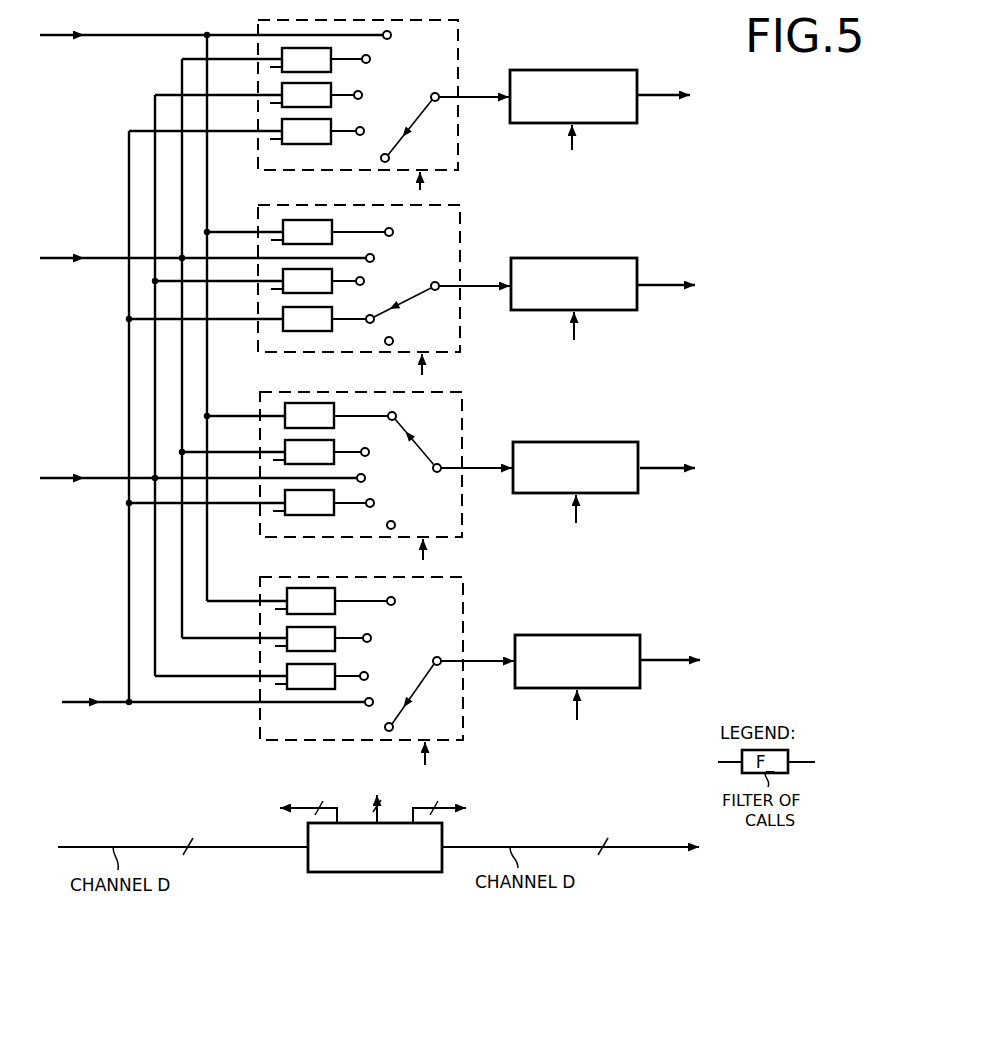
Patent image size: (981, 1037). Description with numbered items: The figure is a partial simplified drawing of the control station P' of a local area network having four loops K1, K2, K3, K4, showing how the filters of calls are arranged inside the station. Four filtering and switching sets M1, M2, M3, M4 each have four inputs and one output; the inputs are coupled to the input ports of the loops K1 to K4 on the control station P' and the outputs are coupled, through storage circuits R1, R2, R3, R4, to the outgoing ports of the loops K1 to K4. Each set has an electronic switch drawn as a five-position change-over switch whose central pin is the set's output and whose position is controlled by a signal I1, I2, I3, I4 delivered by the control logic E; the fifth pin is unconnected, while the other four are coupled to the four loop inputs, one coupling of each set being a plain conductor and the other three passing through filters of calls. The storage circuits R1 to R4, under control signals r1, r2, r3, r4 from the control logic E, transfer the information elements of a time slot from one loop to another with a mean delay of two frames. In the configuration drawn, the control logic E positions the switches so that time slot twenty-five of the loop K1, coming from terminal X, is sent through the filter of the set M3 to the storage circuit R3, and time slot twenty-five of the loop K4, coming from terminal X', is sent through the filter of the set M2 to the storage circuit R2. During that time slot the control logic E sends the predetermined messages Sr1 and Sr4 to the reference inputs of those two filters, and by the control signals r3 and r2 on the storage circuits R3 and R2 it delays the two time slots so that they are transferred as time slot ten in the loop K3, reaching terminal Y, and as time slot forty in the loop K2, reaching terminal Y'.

The filtering and switching set M1 is at (458, 45).
The filtering and switching set M2 is at (321, 275).
The filtering and switching set M3 is at (322, 458).
The filtering and switching set M4 is at (463, 612).
The storage circuit R1 is at (624, 70).
The storage circuit R2 is at (633, 258).
The storage circuit R3 is at (633, 442).
The storage circuit R4 is at (633, 635).
The loop K1 is at (62, 40).
The loop K2 is at (62, 262).
The loop K3 is at (62, 482).
The loop K4 is at (670, 663).
The control signal r1 is at (585, 142).
The control signal r2 is at (588, 329).
The control signal r3 is at (592, 511).
The control signal r4 is at (592, 707).
The switch control signal I1 is at (434, 181).
The switch control signal I2 is at (436, 366).
The switch control signal I3 is at (437, 551).
The switch control signal I4 is at (439, 754).
The predetermined message Sr1 is at (280, 424).
The predetermined message Sr4 is at (278, 328).
The control logic E is at (373, 872).
The terminal X is at (108, 20).
The terminal X' is at (214, 715).
The terminal Y is at (724, 453).
The terminal Y' is at (734, 270).
The control station P' is at (690, 909).